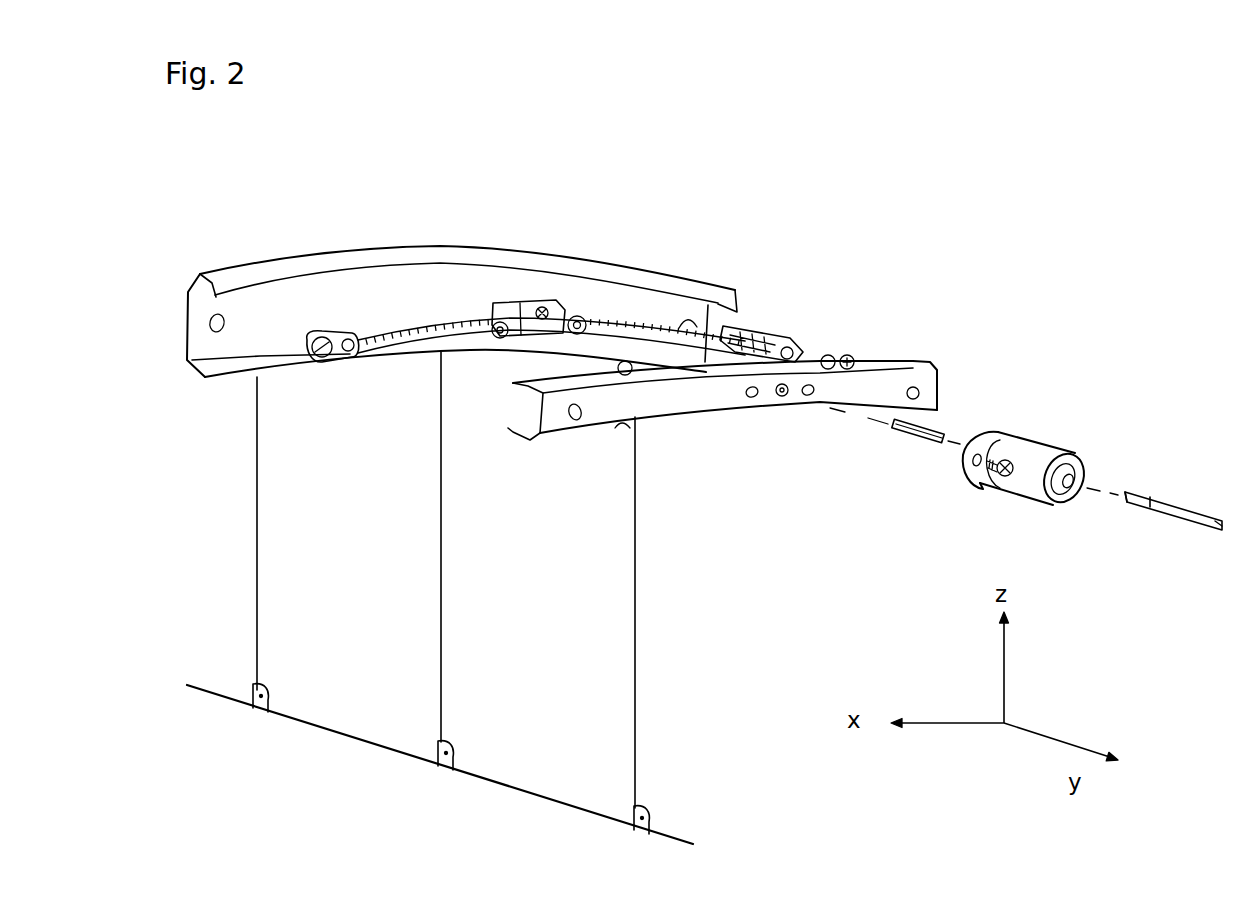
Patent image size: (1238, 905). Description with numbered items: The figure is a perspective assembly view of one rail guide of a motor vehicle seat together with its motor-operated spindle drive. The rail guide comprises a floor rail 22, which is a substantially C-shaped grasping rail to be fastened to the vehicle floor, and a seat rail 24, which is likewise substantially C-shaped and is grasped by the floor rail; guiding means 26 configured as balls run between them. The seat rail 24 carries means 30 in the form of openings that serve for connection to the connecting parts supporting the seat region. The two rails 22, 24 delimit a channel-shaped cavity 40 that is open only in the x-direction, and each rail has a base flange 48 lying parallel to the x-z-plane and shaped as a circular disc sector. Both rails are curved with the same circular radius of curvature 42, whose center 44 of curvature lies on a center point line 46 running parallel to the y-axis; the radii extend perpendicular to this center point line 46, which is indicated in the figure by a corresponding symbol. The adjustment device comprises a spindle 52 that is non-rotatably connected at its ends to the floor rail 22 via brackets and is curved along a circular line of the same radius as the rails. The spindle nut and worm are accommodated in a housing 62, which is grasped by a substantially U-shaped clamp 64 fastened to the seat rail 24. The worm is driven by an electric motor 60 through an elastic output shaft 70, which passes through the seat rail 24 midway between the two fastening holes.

The floor rail 22 is at (277, 250).
The seat rail 24 is at (890, 386).
The guiding means 26 is at (848, 353).
The means for connection 30 is at (920, 393).
The channel-shaped cavity 40 is at (209, 310).
The radius of curvature 42 is at (440, 600).
The center of curvature 44 is at (250, 700).
The center point line 46 is at (320, 730).
The base flange 48 is at (500, 278).
The spindle 52 is at (407, 337).
The electric motor 60 is at (1037, 488).
The housing 62 is at (523, 297).
The clamp 64 is at (578, 313).
The elastic output shaft 70 is at (923, 440).